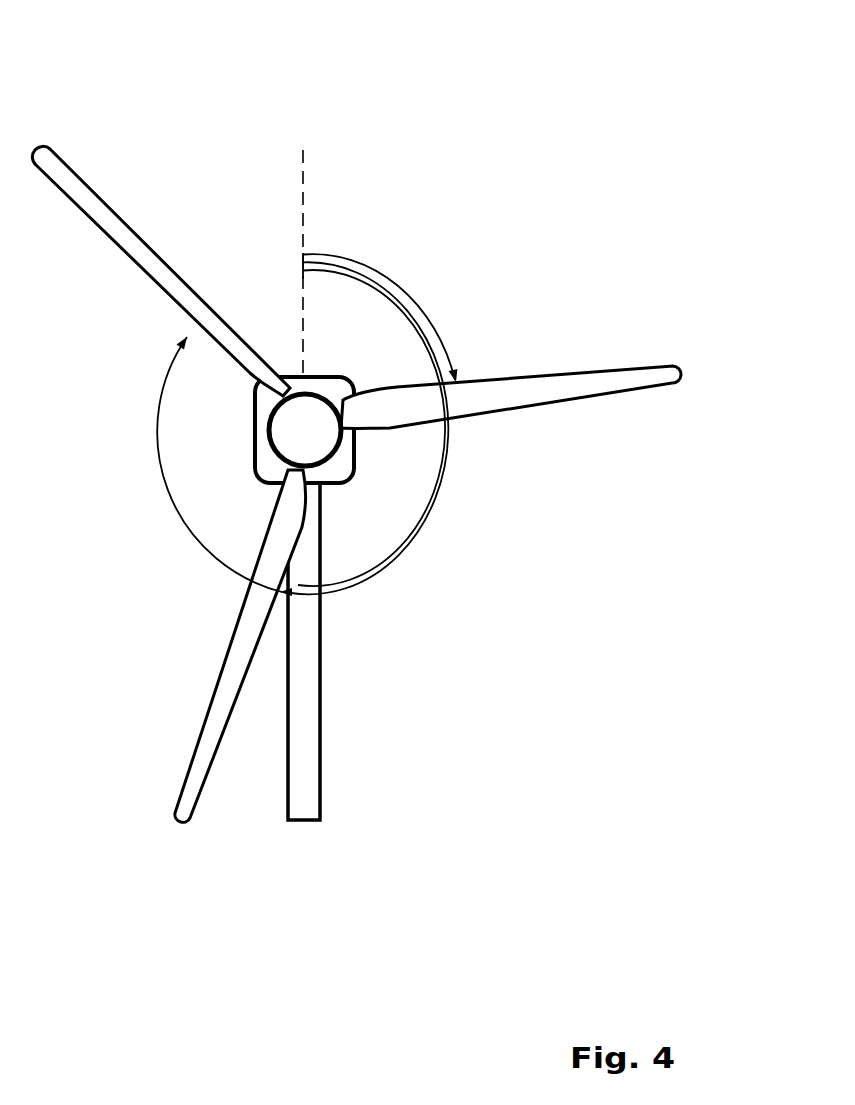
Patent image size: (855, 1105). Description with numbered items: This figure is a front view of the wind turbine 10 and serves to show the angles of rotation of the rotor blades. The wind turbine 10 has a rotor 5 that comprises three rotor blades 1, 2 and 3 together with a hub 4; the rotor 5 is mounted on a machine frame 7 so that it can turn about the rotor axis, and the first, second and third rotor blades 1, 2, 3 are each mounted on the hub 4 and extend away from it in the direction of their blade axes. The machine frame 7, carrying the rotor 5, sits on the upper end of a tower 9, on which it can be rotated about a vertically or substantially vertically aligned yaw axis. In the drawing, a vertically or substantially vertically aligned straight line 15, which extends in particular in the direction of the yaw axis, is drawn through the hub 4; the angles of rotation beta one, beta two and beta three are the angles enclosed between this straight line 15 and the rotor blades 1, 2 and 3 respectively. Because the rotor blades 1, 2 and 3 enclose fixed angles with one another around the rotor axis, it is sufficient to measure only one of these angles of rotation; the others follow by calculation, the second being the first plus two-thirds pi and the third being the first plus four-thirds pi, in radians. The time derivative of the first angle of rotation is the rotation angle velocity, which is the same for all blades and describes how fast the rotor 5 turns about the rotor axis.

The wind turbine 10 is at (356, 417).
The first rotor blade 1 is at (562, 373).
The second rotor blade 2 is at (222, 668).
The third rotor blade 3 is at (107, 202).
The hub 4 is at (281, 421).
The rotor 5 is at (262, 464).
The machine frame 7 is at (356, 453).
The tower 9 is at (325, 716).
The straight line 15 is at (300, 180).